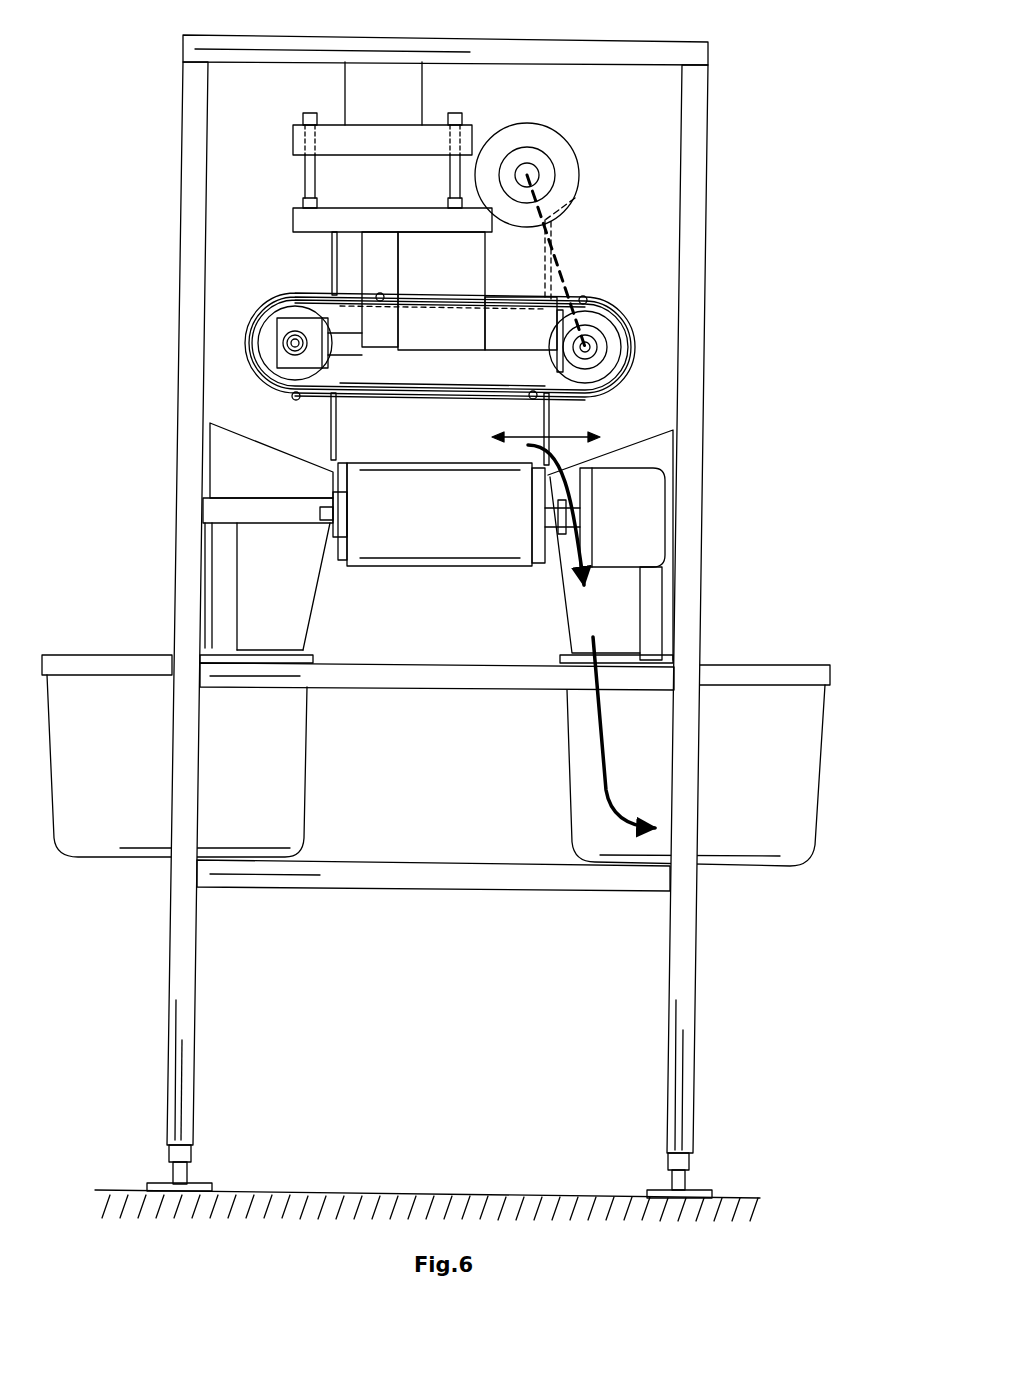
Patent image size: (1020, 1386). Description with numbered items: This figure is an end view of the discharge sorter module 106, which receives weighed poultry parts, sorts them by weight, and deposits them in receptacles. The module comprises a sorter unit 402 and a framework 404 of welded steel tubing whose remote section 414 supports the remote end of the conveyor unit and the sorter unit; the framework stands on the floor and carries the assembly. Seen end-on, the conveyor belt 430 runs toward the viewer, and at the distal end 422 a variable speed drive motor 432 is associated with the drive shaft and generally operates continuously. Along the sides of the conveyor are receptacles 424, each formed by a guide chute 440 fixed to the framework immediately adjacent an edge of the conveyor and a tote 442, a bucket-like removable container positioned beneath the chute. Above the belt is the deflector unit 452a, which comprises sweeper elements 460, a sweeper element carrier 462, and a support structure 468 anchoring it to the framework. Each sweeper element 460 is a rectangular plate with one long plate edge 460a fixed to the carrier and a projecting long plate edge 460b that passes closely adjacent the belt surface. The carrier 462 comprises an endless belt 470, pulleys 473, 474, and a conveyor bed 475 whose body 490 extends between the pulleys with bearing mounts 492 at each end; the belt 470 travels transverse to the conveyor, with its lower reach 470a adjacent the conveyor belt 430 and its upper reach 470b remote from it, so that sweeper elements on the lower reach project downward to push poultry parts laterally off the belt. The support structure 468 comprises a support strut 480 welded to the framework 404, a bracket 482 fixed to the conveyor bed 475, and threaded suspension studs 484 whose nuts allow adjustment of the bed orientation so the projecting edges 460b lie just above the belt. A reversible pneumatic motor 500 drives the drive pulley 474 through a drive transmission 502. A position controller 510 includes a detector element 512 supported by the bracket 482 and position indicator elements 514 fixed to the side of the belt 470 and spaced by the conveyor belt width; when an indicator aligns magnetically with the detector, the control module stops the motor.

The discharge sorter module 106 is at (724, 204).
The sorter unit 402 is at (284, 258).
The framework 404 is at (694, 998).
The remote section 414 is at (673, 1070).
The distal end 422 is at (342, 522).
The receptacles 424 is at (676, 635).
The conveyor belt 430 is at (443, 523).
The drive motor 432 is at (635, 502).
The guide chutes 440 is at (237, 460).
The totes 442 is at (103, 817).
The deflector unit 452a is at (568, 226).
The sweeper elements 460 is at (550, 420).
The long plate edge 460a is at (333, 397).
The projecting long plate edge 460b is at (333, 470).
The sweeper element carrier 462 is at (294, 292).
The support structure 468 is at (289, 139).
The endless belt 470 is at (392, 395).
The lower reach 470a is at (427, 402).
The upper reach 470b is at (440, 292).
The pulley 473 is at (264, 338).
The drive pulley 474 is at (604, 318).
The conveyor bed 475 is at (442, 335).
The support strut 480 is at (390, 97).
The bracket 482 is at (389, 262).
The suspension studs 484 is at (302, 178).
The body 490 is at (437, 347).
The bearing mounts 492 is at (290, 312).
The motor 500 is at (548, 150).
The drive transmission 502 is at (576, 198).
The position controller 510 is at (356, 270).
The detector element 512 is at (381, 290).
The position indicator elements 514 is at (378, 293).